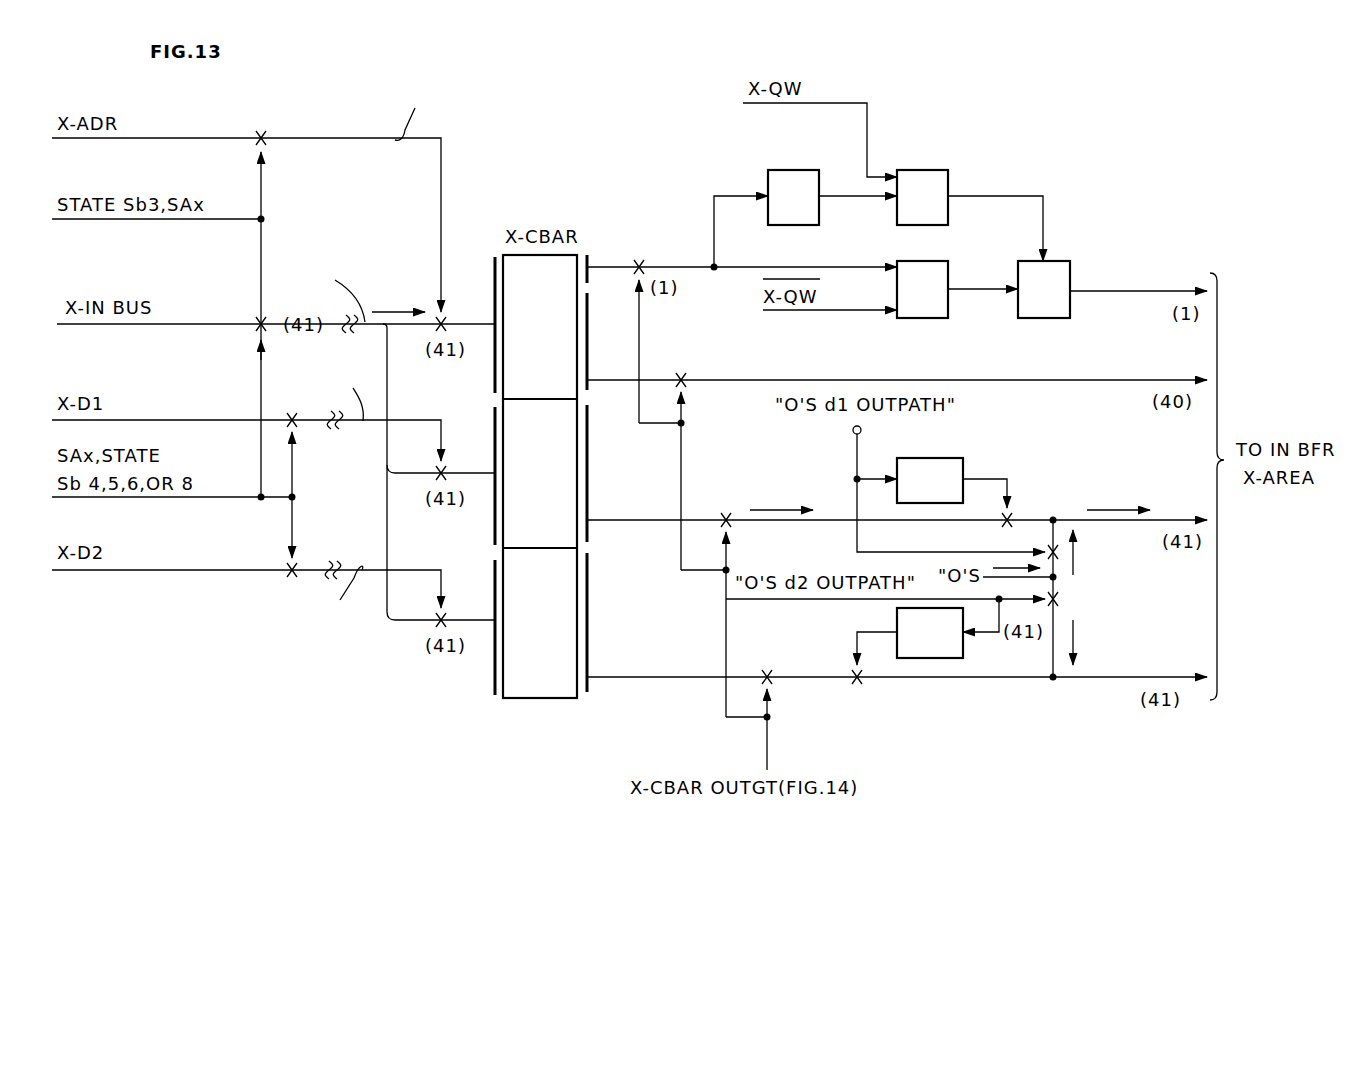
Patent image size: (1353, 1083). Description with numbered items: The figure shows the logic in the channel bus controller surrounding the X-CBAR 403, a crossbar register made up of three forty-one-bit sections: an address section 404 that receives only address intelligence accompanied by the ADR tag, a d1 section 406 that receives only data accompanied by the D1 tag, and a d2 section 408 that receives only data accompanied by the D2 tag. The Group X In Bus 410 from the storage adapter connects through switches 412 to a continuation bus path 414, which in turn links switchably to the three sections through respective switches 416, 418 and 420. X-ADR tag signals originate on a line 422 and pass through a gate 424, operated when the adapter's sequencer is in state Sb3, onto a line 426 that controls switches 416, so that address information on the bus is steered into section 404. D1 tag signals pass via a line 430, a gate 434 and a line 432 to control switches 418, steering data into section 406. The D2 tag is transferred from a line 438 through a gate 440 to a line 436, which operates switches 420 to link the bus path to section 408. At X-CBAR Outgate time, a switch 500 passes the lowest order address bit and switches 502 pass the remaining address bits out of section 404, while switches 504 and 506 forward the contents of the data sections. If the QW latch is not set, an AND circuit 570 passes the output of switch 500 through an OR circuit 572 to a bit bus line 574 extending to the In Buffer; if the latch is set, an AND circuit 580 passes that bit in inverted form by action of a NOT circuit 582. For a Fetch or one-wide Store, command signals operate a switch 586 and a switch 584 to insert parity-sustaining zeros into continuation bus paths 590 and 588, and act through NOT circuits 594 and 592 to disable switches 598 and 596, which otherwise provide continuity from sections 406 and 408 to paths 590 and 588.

The X-CBAR 403 is at (530, 215).
The address section 404 is at (565, 390).
The d1 section 406 is at (570, 505).
The d2 section 408 is at (532, 692).
The Group X In Bus 410 is at (205, 322).
The switches 412 is at (255, 330).
The continuation bus path 414 is at (331, 290).
The switches 416 is at (446, 322).
The switches 418 is at (446, 471).
The switches 420 is at (446, 619).
The line 422 is at (183, 140).
The gate 424 is at (265, 131).
The line 426 is at (430, 115).
The line 430 is at (183, 422).
The line 432 is at (336, 399).
The gate 434 is at (290, 410).
The line 436 is at (331, 591).
The line 438 is at (207, 570).
The gate 440 is at (285, 562).
The switch 500 is at (644, 262).
The switches 502 is at (696, 352).
The switches 504 is at (728, 510).
The switches 506 is at (769, 668).
The AND circuit 570 is at (945, 263).
The OR circuit 572 is at (1050, 305).
The bit bus line 574 is at (1111, 292).
The AND circuit 580 is at (940, 182).
The NOT circuit 582 is at (803, 172).
The switch 584 is at (1063, 597).
The switch 586 is at (1040, 545).
The continuation bus path 588 is at (1120, 678).
The continuation bus path 590 is at (1165, 521).
The NOT circuit 592 is at (958, 645).
The NOT circuit 594 is at (953, 458).
The switch 596 is at (859, 688).
The switch 598 is at (1012, 512).